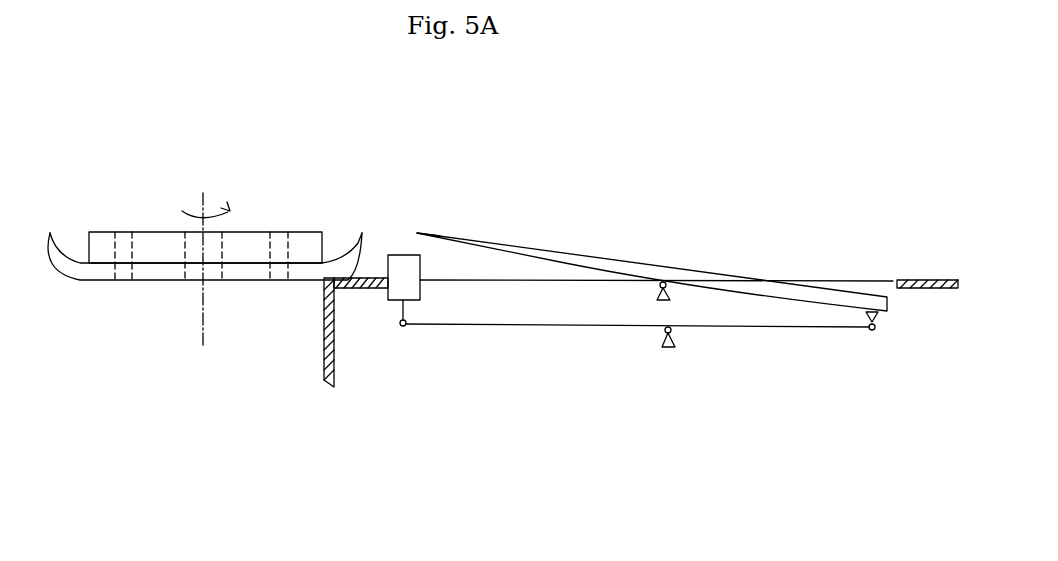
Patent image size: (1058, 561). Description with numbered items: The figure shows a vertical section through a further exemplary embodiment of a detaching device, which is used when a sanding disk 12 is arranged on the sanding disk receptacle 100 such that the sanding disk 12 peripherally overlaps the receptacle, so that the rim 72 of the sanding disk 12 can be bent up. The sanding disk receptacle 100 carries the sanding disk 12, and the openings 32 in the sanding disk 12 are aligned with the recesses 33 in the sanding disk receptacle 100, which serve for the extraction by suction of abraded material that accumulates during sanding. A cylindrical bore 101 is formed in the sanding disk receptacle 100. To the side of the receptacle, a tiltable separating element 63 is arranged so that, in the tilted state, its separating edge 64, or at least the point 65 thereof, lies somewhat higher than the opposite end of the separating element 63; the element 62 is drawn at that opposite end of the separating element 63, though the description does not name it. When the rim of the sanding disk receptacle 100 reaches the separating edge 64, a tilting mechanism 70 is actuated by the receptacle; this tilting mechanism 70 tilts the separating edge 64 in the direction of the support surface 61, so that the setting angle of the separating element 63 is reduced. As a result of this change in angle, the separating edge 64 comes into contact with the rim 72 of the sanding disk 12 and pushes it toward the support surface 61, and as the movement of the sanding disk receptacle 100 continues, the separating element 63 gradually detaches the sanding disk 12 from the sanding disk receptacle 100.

The sanding disk 12 is at (160, 281).
The openings 32 is at (128, 275).
The recesses 33 is at (123, 243).
The sanding disk receptacle 100 is at (165, 243).
The cylindrical bore 101 is at (225, 240).
The rim 72 is at (360, 233).
The support surface 61 is at (378, 276).
The stop 62 is at (890, 283).
The separating element 63 is at (705, 271).
The separating edge 64 is at (482, 243).
The point 65 is at (418, 233).
The tilting mechanism 70 is at (549, 330).